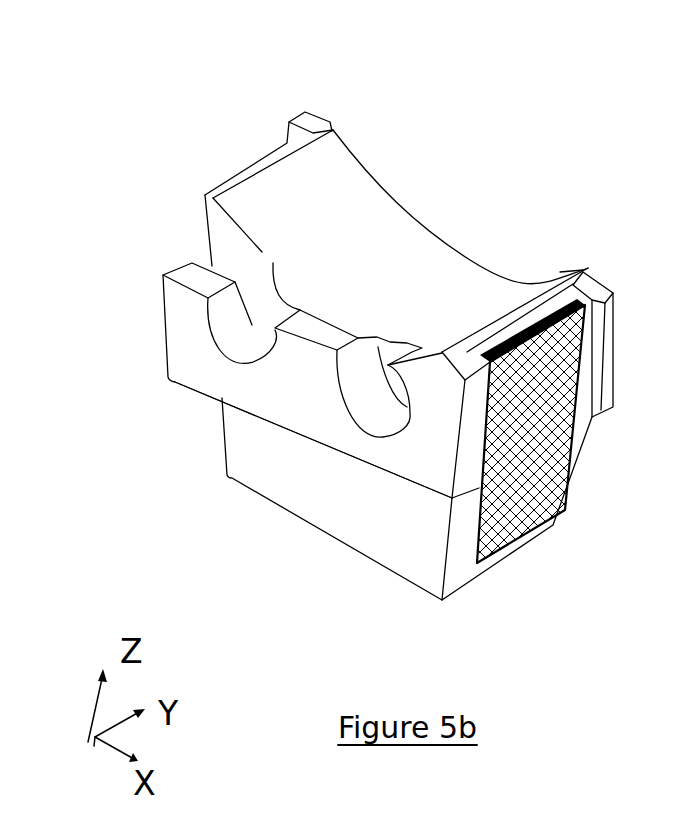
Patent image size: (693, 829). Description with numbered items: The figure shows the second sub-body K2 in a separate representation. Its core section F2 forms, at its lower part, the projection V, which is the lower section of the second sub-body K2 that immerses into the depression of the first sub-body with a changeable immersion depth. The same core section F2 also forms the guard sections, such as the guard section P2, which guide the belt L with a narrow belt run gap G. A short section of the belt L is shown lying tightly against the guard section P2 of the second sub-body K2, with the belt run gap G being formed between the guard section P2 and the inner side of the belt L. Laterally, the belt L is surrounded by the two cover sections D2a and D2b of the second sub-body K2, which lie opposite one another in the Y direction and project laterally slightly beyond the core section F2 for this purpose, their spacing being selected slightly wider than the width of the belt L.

The second sub-body K2 is at (369, 348).
The guard section P2 is at (518, 637).
The cover section D2a is at (276, 388).
The cover section D2b is at (607, 279).
The belt run gap G is at (518, 320).
The belt L is at (552, 467).
The core section F2 is at (343, 528).
The projection V is at (313, 495).